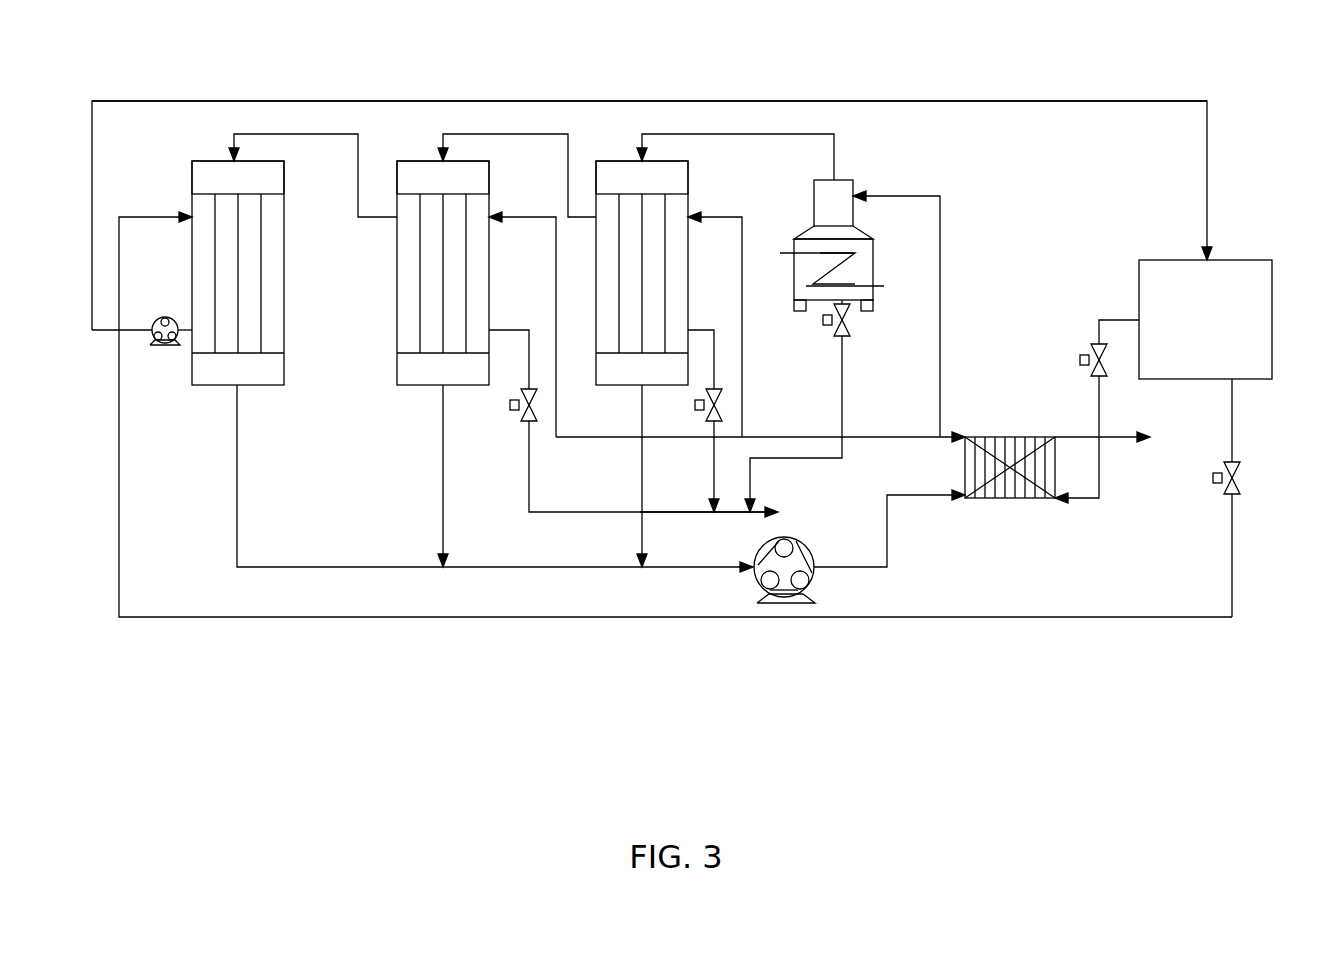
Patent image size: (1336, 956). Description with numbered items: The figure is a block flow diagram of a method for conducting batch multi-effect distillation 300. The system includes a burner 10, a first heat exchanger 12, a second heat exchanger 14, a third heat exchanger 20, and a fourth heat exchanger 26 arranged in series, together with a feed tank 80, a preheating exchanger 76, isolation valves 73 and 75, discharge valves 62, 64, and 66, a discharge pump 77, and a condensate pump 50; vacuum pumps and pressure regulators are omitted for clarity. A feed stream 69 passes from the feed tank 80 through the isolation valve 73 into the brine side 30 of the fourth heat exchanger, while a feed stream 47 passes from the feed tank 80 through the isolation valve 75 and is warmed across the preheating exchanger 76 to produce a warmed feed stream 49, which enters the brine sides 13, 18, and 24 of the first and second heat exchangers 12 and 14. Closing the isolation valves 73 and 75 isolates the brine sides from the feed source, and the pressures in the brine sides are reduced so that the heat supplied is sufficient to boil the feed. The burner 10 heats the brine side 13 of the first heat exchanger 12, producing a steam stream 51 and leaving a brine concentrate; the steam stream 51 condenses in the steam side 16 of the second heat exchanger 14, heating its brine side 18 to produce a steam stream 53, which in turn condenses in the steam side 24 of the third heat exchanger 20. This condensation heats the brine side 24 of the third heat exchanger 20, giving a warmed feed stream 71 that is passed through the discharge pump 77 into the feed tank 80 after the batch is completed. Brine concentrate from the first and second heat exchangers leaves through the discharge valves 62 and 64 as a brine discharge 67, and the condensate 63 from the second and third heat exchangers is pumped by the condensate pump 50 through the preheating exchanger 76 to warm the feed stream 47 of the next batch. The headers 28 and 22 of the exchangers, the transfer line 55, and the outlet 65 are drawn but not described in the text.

The method for conducting batch multi-effect distillation 300 is at (186, 78).
The warmed feed stream 71 is at (649, 87).
The fourth heat exchanger 26 is at (196, 161).
The header of third reactor 28 is at (273, 174).
The brine side of the fourth heat exchanger 30 is at (273, 247).
The third heat exchanger 20 is at (406, 161).
The header of second reactor 22 is at (478, 172).
The brine side of the third heat exchanger 24 is at (410, 293).
The second heat exchanger 14 is at (605, 161).
The steam side of the second heat exchanger 16 is at (680, 168).
The brine side of the second heat exchanger 18 is at (673, 289).
The transfer line 55 is at (313, 161).
The steam stream 53 is at (517, 161).
The steam stream 51 is at (735, 143).
The first heat exchanger 12 is at (855, 180).
The brine side of the first heat exchanger 13 is at (806, 292).
The burner 10 is at (885, 290).
The discharge valve 62 is at (850, 336).
The warmed feed stream 49 is at (732, 327).
The feed stream 69 is at (675, 402).
The discharge pump 77 is at (170, 318).
The condensate pump 50 is at (815, 540).
The discharge valve 66 is at (527, 422).
The brine discharge 67 is at (727, 511).
The discharge valve 64 is at (720, 422).
The preheating exchanger 76 is at (1023, 437).
The condensate 63 is at (889, 517).
The outlet line 65 is at (1118, 436).
The feed stream 47 is at (1097, 397).
The isolation valve 75 is at (1097, 345).
The feed tank 80 is at (1139, 262).
The isolation valve 73 is at (1240, 470).